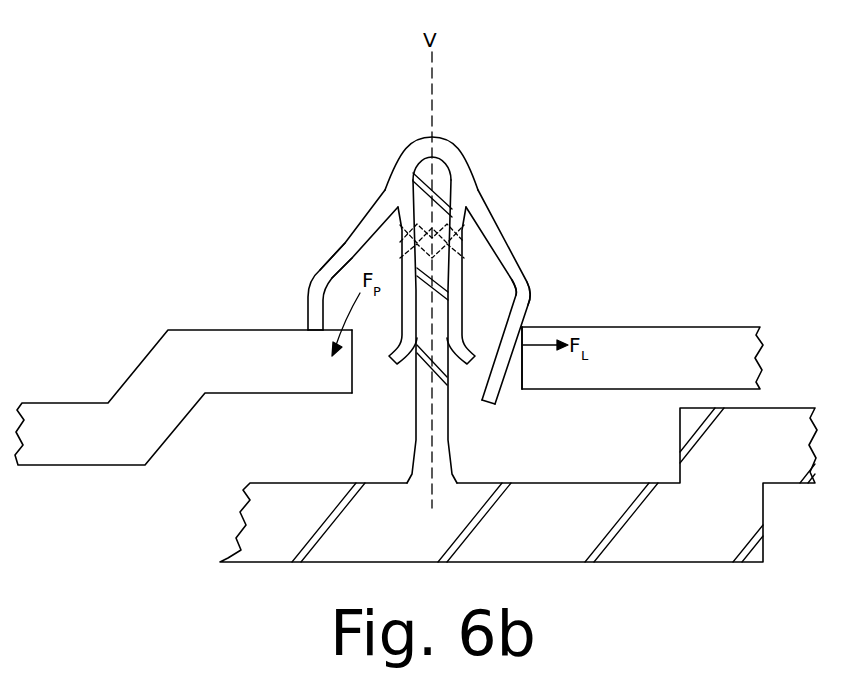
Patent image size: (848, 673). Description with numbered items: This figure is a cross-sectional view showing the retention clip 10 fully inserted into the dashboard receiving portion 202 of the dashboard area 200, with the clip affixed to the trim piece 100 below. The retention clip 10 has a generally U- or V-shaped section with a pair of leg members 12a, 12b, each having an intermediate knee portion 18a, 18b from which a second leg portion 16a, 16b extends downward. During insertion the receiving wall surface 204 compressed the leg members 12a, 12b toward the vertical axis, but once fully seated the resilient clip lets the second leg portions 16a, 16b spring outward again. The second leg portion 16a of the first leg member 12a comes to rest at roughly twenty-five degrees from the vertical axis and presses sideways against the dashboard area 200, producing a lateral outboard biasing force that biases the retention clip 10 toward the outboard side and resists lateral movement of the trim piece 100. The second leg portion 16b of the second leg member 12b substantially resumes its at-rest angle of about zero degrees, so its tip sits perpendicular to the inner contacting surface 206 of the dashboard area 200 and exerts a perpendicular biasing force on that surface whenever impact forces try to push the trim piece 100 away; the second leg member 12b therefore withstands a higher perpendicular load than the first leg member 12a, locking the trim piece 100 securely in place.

The retention clip 10 is at (478, 134).
The first leg member 12a is at (508, 231).
The second leg member 12b is at (345, 246).
The second leg portion 16a is at (493, 390).
The second leg portion 16b is at (317, 318).
The intermediate knee portion 18a is at (520, 273).
The intermediate knee portion 18b is at (322, 282).
The trim piece 100 is at (642, 533).
The dashboard area 200 is at (603, 342).
The dashboard receiving portion 202 is at (377, 378).
The receiving wall surface 204 is at (523, 355).
The inner contacting surface 206 is at (220, 330).